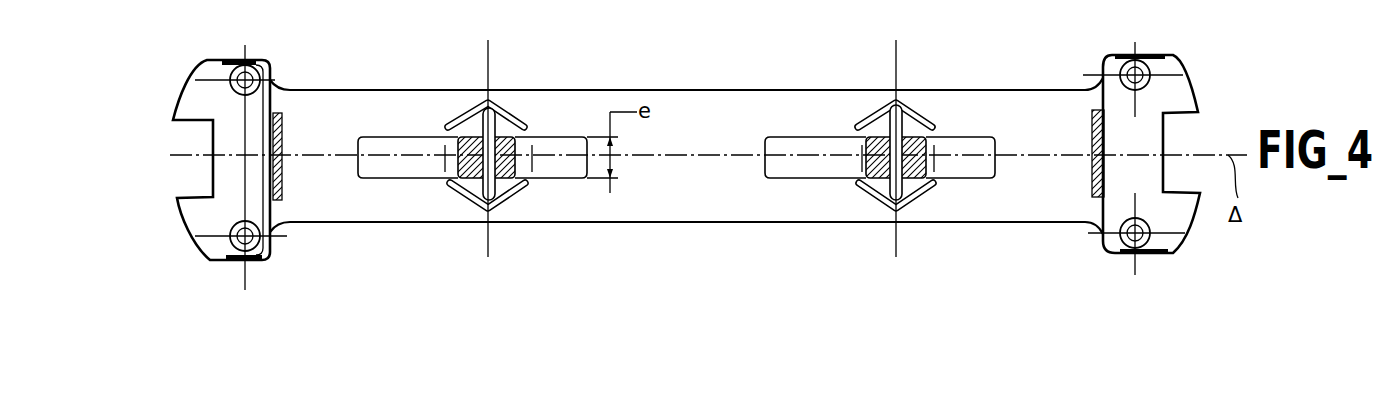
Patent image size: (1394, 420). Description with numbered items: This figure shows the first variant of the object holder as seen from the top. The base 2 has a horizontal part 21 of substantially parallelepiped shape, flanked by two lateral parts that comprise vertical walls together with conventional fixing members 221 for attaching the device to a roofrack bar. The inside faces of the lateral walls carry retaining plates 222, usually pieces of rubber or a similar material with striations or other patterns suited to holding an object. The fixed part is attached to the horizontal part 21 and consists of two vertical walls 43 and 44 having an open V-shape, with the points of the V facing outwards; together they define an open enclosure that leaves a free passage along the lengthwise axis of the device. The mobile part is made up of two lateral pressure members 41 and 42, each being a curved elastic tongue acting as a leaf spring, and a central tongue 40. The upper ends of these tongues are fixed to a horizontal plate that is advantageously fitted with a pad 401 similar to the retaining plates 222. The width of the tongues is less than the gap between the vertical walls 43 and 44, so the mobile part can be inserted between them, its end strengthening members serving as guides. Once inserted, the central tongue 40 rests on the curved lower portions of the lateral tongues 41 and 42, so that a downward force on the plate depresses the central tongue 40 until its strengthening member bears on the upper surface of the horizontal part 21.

The base 2 is at (699, 230).
The horizontal part 21 is at (708, 102).
The fixing members 221 is at (190, 95).
The retaining plates 222 is at (283, 190).
The central tongue 40 is at (480, 200).
The pad 401 is at (527, 137).
The lateral pressure member 41 is at (402, 168).
The lateral pressure member 42 is at (587, 173).
The vertical wall 43 is at (515, 197).
The vertical wall 44 is at (510, 112).